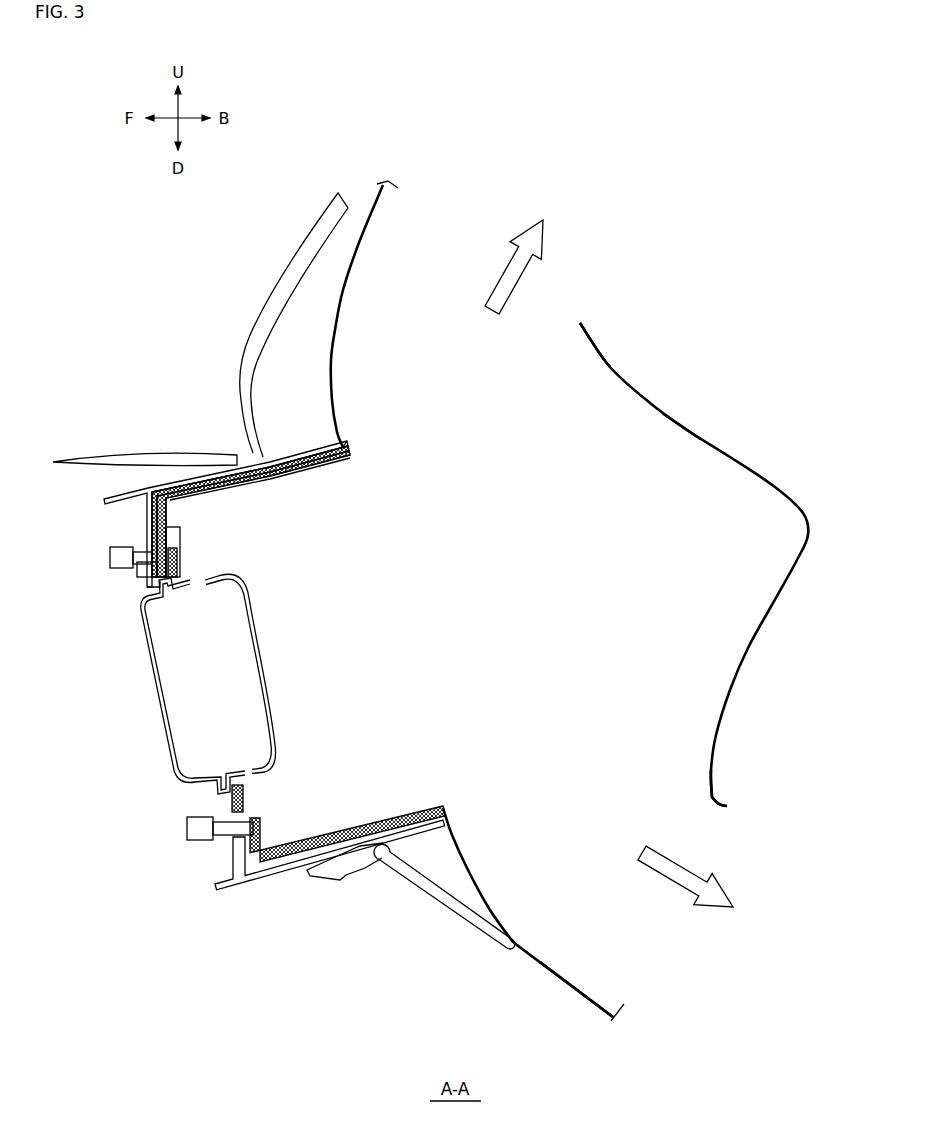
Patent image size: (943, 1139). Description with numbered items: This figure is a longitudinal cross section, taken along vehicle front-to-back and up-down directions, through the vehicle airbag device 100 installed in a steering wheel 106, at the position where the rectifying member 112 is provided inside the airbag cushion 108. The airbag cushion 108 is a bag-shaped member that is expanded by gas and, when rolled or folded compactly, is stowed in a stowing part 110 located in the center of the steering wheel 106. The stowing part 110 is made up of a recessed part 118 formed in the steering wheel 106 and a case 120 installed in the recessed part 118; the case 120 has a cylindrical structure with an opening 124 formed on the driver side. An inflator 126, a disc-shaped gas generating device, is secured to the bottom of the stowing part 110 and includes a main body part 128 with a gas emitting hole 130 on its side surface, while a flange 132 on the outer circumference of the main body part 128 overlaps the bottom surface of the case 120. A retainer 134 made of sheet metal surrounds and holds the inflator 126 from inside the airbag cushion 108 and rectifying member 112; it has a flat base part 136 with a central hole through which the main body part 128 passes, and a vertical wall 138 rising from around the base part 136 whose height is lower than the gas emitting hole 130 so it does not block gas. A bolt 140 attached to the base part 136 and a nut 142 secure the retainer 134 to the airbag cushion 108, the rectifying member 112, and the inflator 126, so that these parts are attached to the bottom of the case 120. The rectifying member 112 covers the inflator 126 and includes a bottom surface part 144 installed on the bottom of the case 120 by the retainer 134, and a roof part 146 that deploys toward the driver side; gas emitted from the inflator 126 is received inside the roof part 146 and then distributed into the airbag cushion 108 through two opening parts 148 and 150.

The vehicle airbag device 100 is at (387, 138).
The steering wheel 106 is at (258, 318).
The airbag cushion 108 is at (600, 1010).
The stowing part 110 is at (388, 856).
The rectifying member 112 is at (612, 368).
The recessed part 118 is at (172, 477).
The case 120 is at (290, 452).
The opening 124 is at (357, 446).
The inflator 126 is at (140, 647).
The main body part 128 is at (262, 655).
The gas emitting hole 130 is at (270, 777).
The flange 132 is at (226, 798).
The retainer 134 is at (192, 497).
The base part 136 is at (196, 573).
The vertical wall 138 is at (186, 510).
The bolt 140 is at (122, 553).
The nut 142 is at (150, 572).
The bottom surface part 144 is at (260, 818).
The roof part 146 is at (690, 430).
The opening part 148 is at (728, 806).
The opening part 150 is at (582, 323).